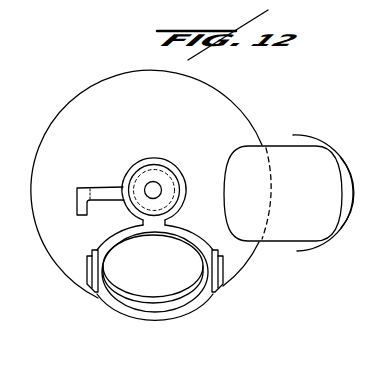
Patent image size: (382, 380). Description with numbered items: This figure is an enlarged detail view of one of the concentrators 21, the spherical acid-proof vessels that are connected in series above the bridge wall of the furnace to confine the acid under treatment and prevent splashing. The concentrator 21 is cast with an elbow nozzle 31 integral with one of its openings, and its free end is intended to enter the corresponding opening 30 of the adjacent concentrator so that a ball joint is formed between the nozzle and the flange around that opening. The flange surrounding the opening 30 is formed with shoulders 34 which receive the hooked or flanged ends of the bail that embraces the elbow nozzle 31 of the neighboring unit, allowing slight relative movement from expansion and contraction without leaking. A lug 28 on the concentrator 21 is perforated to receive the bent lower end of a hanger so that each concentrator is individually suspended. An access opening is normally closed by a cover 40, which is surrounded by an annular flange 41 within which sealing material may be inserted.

The concentrator 21 is at (146, 184).
The lug 28 is at (86, 187).
The opening 30 is at (155, 272).
The elbow nozzle 31 is at (289, 193).
The shoulders 34 is at (92, 281).
The cover 40 is at (160, 181).
The annular flange 41 is at (137, 161).